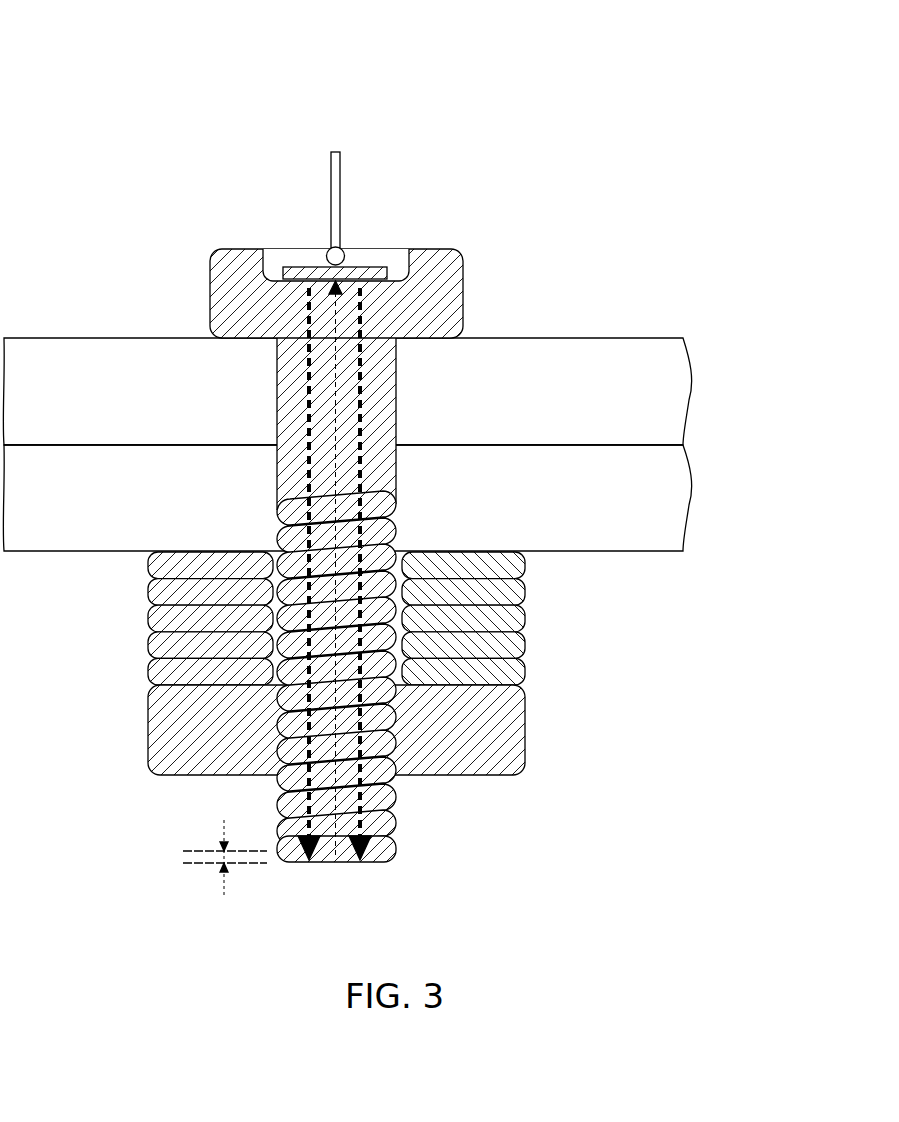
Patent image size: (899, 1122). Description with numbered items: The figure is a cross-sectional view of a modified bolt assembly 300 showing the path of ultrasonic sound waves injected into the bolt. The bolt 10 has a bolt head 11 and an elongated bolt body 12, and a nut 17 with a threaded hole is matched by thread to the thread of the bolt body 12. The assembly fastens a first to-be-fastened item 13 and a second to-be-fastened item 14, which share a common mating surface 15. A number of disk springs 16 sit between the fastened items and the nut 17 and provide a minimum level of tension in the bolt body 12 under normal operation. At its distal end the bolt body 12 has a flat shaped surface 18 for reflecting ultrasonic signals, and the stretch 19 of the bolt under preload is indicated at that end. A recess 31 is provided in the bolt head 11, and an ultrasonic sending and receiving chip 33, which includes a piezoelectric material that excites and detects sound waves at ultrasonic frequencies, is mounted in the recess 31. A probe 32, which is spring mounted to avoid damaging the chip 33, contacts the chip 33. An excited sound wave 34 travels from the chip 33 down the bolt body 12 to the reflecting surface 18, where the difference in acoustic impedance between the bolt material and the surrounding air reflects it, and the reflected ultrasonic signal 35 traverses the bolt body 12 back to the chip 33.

The modified bolt assembly 300 is at (186, 136).
The bolt 10 is at (319, 546).
The bolt head 11 is at (452, 293).
The bolt body 12 is at (298, 390).
The first to-be-fastened item 13 is at (668, 378).
The second to-be-fastened item 14 is at (675, 492).
The common mating surface 15 is at (557, 446).
The disk springs 16 is at (512, 622).
The nut 17 is at (495, 715).
The flat shaped surface 18 is at (372, 864).
The stretch 19 is at (130, 852).
The recess 31 is at (395, 262).
The probe 32 is at (334, 212).
The ultrasonic sending and receiving chip 33 is at (347, 272).
The excited sound wave 34 is at (310, 416).
The reflected ultrasonic signal 35 is at (337, 428).